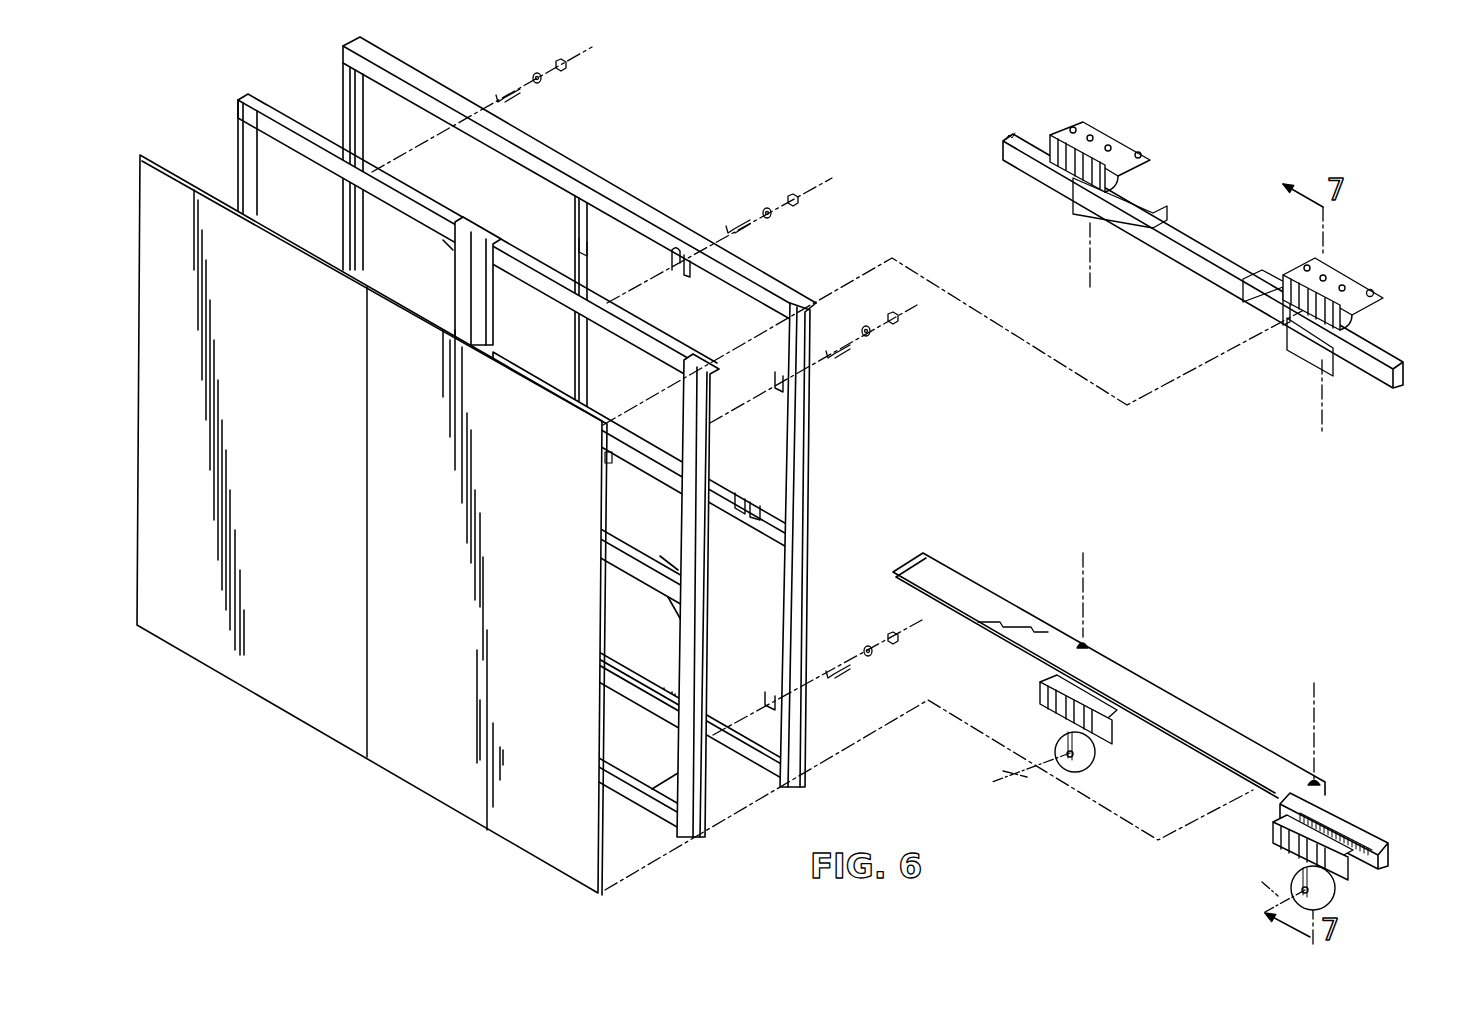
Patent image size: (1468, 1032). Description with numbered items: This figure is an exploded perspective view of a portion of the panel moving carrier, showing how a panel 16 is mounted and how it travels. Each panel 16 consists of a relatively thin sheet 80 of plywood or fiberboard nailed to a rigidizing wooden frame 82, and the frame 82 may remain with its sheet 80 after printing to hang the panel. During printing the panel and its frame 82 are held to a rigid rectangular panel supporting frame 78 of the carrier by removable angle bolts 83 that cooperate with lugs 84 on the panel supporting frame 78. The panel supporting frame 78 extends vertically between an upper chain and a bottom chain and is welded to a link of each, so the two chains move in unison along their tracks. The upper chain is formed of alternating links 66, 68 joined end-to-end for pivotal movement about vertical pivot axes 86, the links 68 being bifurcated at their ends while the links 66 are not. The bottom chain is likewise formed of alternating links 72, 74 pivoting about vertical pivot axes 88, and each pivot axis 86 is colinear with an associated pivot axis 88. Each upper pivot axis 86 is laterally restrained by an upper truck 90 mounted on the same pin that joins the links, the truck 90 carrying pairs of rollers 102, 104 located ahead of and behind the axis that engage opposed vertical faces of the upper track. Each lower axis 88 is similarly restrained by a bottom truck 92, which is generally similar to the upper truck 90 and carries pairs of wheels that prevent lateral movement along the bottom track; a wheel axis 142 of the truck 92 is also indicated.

The panel 16 is at (248, 680).
The upper link 66 is at (1020, 163).
The upper link 68 is at (1260, 280).
The bottom link 72 is at (1342, 810).
The bottom link 74 is at (1193, 756).
The panel supporting frame 78 is at (786, 298).
The sheet 80 is at (153, 180).
The rigidizing wooden frame 82 is at (246, 117).
The angle bolt 83 is at (510, 96).
The lug 84 is at (690, 268).
The vertical pivot axis 86 is at (1097, 238).
The vertical pivot axis 88 is at (1086, 563).
The upper truck 90 is at (1123, 138).
The bottom truck 92 is at (1052, 674).
The roller 102 is at (1307, 273).
The roller 104 is at (1370, 289).
The caster axis 142 is at (1135, 832).